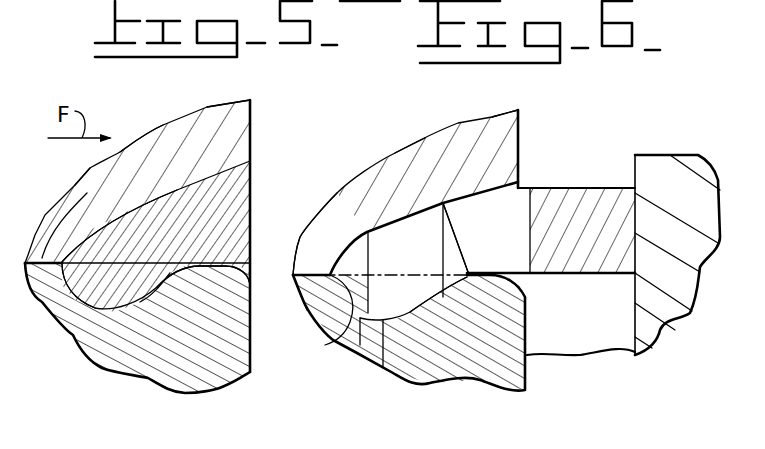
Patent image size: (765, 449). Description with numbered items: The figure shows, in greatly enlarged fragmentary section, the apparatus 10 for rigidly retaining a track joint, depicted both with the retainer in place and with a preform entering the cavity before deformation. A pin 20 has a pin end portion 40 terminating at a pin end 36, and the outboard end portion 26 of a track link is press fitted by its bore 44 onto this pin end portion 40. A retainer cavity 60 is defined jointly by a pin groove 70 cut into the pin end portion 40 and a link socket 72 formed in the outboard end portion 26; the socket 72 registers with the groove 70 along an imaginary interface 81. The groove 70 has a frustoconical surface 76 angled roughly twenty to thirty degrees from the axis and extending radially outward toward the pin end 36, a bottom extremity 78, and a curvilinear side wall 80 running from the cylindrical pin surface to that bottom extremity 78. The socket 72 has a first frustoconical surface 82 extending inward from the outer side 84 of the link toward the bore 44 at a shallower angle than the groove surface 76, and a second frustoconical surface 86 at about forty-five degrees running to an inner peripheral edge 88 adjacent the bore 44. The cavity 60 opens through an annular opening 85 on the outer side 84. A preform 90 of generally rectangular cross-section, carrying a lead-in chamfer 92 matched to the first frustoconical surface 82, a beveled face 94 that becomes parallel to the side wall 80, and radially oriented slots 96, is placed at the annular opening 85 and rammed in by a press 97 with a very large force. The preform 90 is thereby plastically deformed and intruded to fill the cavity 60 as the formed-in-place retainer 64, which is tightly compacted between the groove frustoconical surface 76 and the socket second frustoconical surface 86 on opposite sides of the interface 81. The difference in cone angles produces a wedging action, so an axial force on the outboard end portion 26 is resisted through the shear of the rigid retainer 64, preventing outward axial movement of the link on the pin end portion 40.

In FIG. 6, the apparatus 10 is at (318, 175).
In FIG. 5, the pin 20 is at (120, 378).
In FIG. 5, the outboard end portion 26 is at (200, 122).
In FIG. 6, the outboard end portion 26 is at (468, 133).
In FIG. 5, the pin end 36 is at (255, 345).
In FIG. 6, the pin end 36 is at (527, 330).
In FIG. 5, the pin end portion 40 is at (202, 377).
In FIG. 6, the pin end portion 40 is at (393, 378).
In FIG. 5, the bore 44 is at (74, 202).
In FIG. 6, the bore 44 is at (307, 312).
In FIG. 5, the retainer cavity 60 is at (207, 213).
In FIG. 6, the retainer cavity 60 is at (328, 338).
In FIG. 5, the retainer 64 is at (257, 193).
In FIG. 5, the pin groove 70 is at (144, 305).
In FIG. 6, the pin groove 70 is at (409, 317).
In FIG. 5, the link socket 72 is at (162, 192).
In FIG. 6, the link socket 72 is at (413, 180).
In FIG. 5, the frustoconical surface 76 is at (167, 300).
In FIG. 6, the frustoconical surface 76 is at (447, 310).
In FIG. 5, the bottom extremity 78 is at (86, 290).
In FIG. 6, the bottom extremity 78 is at (388, 355).
In FIG. 5, the curvilinear side wall 80 is at (87, 357).
In FIG. 6, the curvilinear side wall 80 is at (360, 345).
In FIG. 5, the imaginary interface 81 is at (173, 275).
In FIG. 6, the imaginary interface 81 is at (445, 273).
In FIG. 5, the first frustoconical surface 82 is at (253, 155).
In FIG. 6, the first frustoconical surface 82 is at (430, 182).
In FIG. 5, the outer side 84 is at (253, 118).
In FIG. 6, the outer side 84 is at (520, 120).
In FIG. 6, the annular opening 85 is at (530, 186).
In FIG. 5, the second frustoconical surface 86 is at (85, 232).
In FIG. 6, the second frustoconical surface 86 is at (352, 252).
In FIG. 5, the inner peripheral edge 88 is at (65, 306).
In FIG. 6, the inner peripheral edge 88 is at (297, 273).
In FIG. 6, the preform 90 is at (617, 183).
In FIG. 6, the lead-in chamfer 92 is at (520, 147).
In FIG. 6, the beveled face 94 is at (460, 242).
In FIG. 6, the radially oriented slots 96 is at (505, 225).
In FIG. 6, the press 97 is at (660, 350).